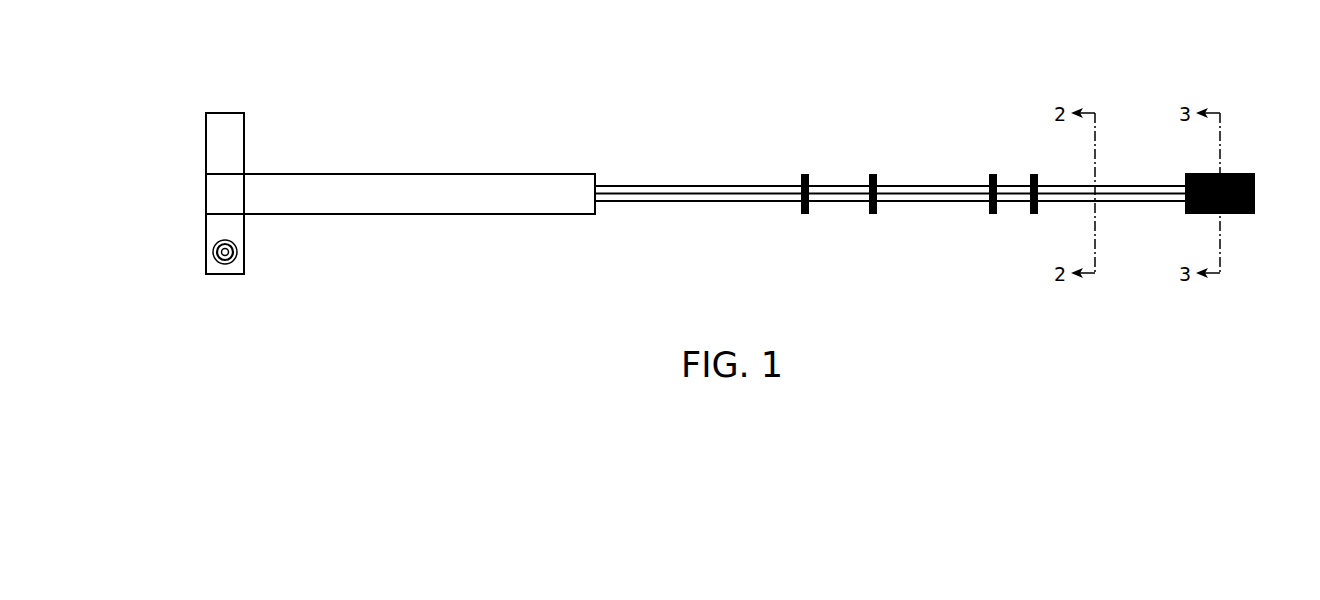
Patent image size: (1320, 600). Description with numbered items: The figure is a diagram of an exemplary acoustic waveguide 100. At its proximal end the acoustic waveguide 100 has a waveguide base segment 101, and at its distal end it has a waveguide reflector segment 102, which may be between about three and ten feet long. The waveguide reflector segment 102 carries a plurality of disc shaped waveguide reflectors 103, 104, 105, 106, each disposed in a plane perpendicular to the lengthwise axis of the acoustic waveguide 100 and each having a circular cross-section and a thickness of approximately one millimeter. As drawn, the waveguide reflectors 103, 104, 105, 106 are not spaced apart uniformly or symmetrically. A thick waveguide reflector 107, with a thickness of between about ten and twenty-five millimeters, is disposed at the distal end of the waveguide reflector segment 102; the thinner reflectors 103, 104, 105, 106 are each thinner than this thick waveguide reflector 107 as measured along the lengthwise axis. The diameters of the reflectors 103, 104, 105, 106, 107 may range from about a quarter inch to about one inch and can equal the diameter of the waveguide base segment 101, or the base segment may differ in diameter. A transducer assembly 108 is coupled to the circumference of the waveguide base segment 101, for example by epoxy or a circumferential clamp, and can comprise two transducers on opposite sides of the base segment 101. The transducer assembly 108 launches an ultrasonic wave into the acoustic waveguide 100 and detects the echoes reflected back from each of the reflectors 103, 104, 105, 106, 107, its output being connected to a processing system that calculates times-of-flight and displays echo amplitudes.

The acoustic waveguide 100 is at (600, 112).
The waveguide base segment 101 is at (409, 173).
The waveguide reflector segment 102 is at (718, 202).
The waveguide reflector 103 is at (805, 214).
The waveguide reflector 104 is at (873, 214).
The waveguide reflector 105 is at (993, 214).
The waveguide reflector 106 is at (1034, 214).
The thick waveguide reflector 107 is at (1243, 215).
The transducer assembly 108 is at (206, 128).